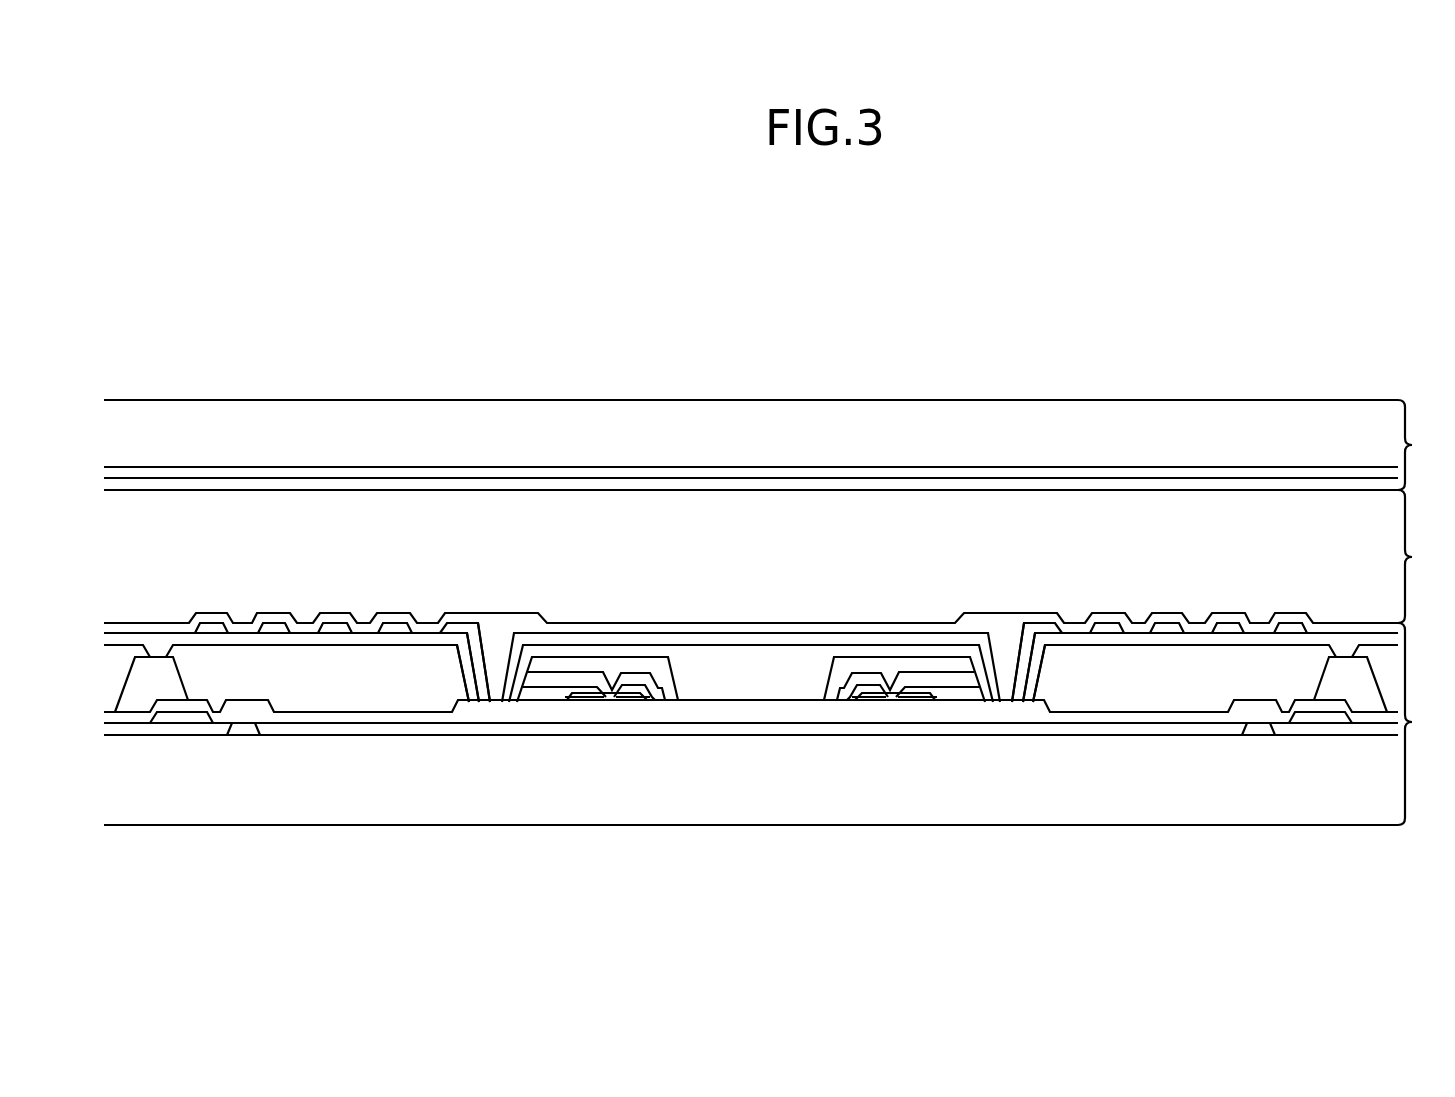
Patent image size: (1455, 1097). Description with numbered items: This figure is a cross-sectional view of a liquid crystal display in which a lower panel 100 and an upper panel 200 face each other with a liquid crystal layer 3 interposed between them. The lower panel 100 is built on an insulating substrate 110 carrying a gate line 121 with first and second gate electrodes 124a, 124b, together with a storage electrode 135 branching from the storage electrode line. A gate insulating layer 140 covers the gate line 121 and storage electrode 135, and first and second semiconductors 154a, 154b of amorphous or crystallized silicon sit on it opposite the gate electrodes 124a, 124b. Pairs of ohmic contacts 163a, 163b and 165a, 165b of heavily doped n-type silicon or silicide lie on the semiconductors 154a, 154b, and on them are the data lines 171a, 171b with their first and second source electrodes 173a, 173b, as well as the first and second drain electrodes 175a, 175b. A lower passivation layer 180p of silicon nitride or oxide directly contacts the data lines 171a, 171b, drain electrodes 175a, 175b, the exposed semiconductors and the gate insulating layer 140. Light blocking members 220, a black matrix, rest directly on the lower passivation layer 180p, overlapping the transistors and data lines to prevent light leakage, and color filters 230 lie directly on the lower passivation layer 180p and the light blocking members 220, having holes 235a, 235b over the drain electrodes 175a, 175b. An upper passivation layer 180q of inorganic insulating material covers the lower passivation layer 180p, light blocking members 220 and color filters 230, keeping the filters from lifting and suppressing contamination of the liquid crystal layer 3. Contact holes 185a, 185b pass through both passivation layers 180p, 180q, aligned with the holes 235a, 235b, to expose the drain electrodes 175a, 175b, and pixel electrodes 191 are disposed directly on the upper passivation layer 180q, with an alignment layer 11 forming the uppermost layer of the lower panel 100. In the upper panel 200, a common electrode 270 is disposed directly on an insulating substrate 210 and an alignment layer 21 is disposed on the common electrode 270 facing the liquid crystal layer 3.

The liquid crystal layer 3 is at (1418, 556).
The alignment layer 11 is at (752, 622).
The alignment layer 21 is at (1107, 482).
The lower panel 100 is at (1424, 724).
The insulating substrate 110 is at (300, 800).
The gate line 121 is at (750, 727).
The first gate electrode 124a is at (912, 728).
The second gate electrode 124b is at (590, 728).
The storage electrode 135 is at (1262, 735).
The gate insulating layer 140 is at (425, 727).
The first semiconductor 154a is at (884, 704).
The second semiconductor 154b is at (620, 704).
The ohmic contact 163a is at (860, 698).
The ohmic contact 163b is at (642, 698).
The ohmic contact 165a is at (922, 698).
The ohmic contact 165b is at (580, 698).
The data line 171a is at (1322, 717).
The data line 171b is at (180, 717).
The first source electrode 173a is at (870, 690).
The second source electrode 173b is at (633, 690).
The first drain electrode 175a is at (1005, 704).
The second drain electrode 175b is at (498, 704).
The lower passivation layer 180p is at (1135, 718).
The upper passivation layer 180q is at (1170, 648).
The contact hole 185a is at (1020, 655).
The contact hole 185b is at (485, 655).
The pixel electrode 191 is at (1291, 628).
The upper panel 200 is at (1424, 445).
The insulating substrate 210 is at (968, 425).
The light blocking member 220 is at (1345, 670).
The color filter 230 is at (1080, 690).
The hole 235a is at (977, 645).
The hole 235b is at (525, 645).
The common electrode 270 is at (752, 474).